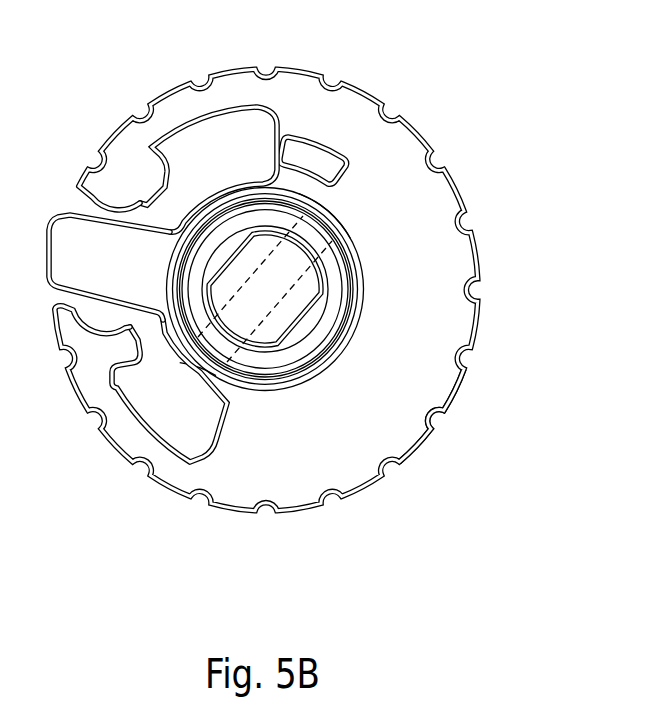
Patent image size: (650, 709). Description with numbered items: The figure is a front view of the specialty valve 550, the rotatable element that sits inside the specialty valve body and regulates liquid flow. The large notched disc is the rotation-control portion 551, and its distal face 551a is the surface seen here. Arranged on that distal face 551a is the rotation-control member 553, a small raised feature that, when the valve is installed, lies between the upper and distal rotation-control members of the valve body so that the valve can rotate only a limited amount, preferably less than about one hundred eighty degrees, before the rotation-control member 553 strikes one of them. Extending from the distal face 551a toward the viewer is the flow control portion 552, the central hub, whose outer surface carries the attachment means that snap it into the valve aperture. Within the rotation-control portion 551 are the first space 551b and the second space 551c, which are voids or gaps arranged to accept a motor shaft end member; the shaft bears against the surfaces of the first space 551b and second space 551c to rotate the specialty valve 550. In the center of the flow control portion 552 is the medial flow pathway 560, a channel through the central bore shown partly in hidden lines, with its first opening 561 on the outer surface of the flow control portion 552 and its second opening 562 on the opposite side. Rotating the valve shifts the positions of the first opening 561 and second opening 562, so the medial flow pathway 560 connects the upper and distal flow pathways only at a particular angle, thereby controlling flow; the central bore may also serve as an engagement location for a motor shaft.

The specialty valve 550 is at (310, 282).
The rotation-control portion 551 is at (305, 308).
The distal face 551a is at (408, 427).
The first space 551b is at (203, 147).
The second space 551c is at (171, 426).
The flow control portion 552 is at (305, 282).
The rotation-control member 553 is at (305, 158).
The medial flow pathway 560 is at (290, 290).
The first opening 561 is at (338, 206).
The second opening 562 is at (196, 377).